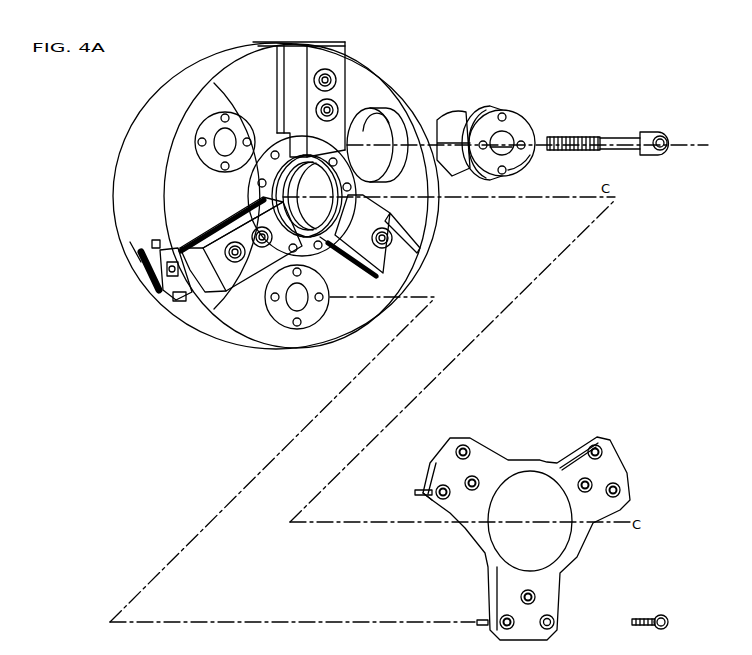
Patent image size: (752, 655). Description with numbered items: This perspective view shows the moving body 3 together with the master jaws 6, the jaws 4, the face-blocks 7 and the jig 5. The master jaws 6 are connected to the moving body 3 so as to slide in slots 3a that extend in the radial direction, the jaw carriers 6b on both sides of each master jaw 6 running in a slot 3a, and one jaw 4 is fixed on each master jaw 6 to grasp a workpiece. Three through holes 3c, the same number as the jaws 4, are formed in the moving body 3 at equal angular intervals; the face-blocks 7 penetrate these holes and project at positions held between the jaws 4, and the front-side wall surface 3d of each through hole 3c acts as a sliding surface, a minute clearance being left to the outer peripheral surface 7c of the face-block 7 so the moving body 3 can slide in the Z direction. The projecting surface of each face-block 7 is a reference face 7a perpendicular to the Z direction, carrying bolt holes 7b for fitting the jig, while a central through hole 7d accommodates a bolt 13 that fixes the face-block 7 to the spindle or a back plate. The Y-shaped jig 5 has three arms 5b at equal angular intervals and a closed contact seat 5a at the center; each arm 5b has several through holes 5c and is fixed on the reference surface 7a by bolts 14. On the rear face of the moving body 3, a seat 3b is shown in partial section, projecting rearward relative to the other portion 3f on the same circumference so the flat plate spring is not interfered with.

The moving body 3 is at (208, 50).
The slot 3a is at (134, 245).
The seat 3b is at (140, 268).
The through hole 3c is at (365, 131).
The wall surface 3d is at (396, 130).
The other portion 3f is at (138, 252).
The jaw 4 is at (346, 62).
The jig 5 is at (538, 462).
The contact seat 5a is at (560, 538).
The arm 5b is at (606, 468).
The through hole 5c is at (553, 620).
The master jaw 6 is at (167, 300).
The jaw carrier 6b is at (152, 278).
The face-block 7 is at (195, 145).
The reference face 7a is at (518, 158).
The bolt hole 7b is at (525, 141).
The outer peripheral surface 7c is at (467, 128).
The central through hole 7d is at (497, 130).
The bolt 13 is at (666, 134).
The bolt 14 is at (668, 620).